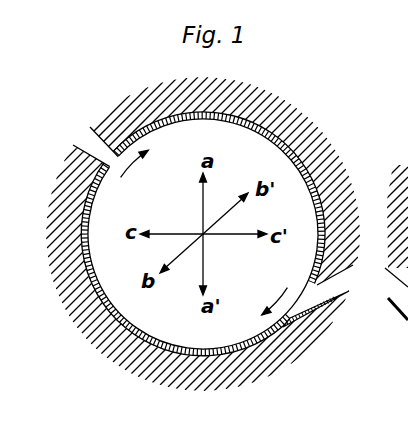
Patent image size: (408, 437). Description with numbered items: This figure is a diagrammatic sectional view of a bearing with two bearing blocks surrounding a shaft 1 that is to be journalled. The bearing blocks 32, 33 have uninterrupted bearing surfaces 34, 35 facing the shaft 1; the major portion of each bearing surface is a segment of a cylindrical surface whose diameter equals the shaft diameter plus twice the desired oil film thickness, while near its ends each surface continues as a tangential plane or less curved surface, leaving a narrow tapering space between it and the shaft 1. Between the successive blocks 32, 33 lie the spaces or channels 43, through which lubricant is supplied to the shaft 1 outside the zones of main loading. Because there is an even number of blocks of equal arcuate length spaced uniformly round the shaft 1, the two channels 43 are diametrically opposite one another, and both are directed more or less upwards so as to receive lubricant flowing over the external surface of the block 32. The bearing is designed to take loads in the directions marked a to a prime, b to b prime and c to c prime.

The shaft 1 is at (271, 157).
The bearing block 32 is at (214, 107).
The bearing block 33 is at (200, 370).
The bearing surface 34 is at (317, 218).
The bearing surface 35 is at (170, 345).
The channel 43 is at (95, 150).